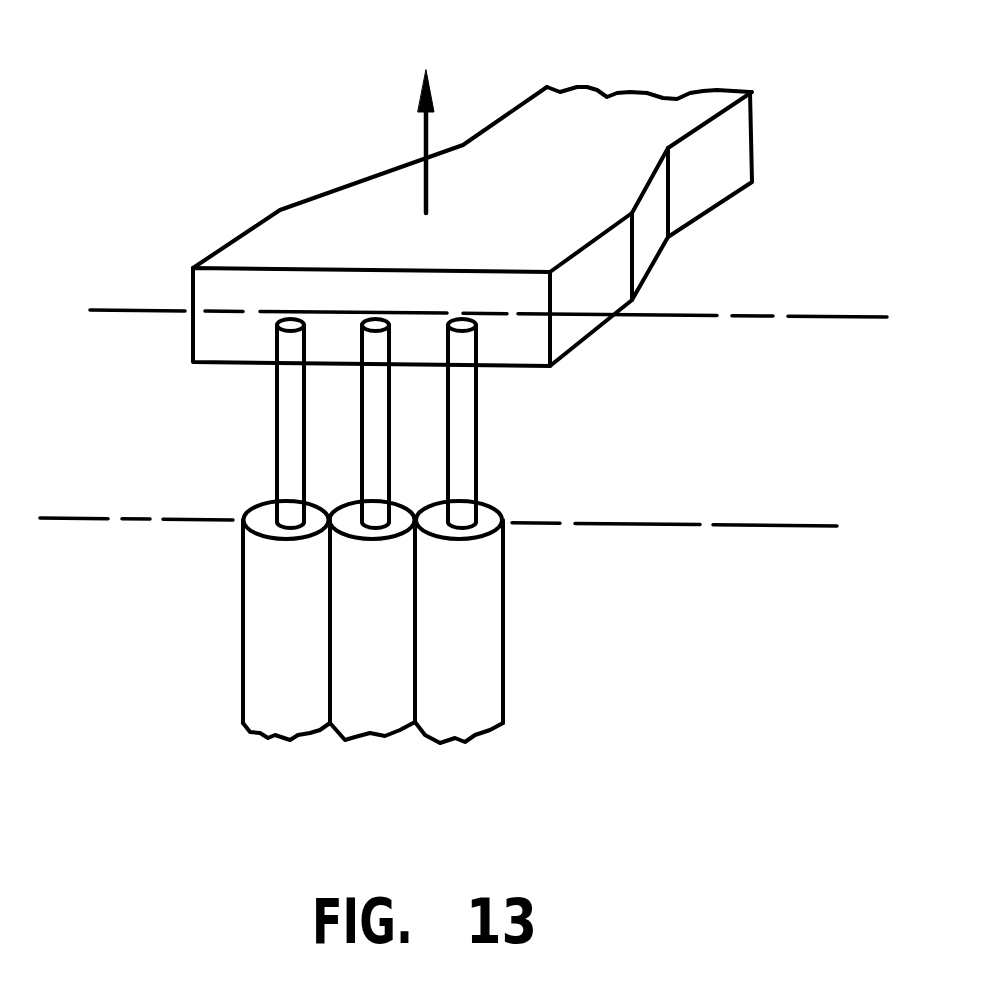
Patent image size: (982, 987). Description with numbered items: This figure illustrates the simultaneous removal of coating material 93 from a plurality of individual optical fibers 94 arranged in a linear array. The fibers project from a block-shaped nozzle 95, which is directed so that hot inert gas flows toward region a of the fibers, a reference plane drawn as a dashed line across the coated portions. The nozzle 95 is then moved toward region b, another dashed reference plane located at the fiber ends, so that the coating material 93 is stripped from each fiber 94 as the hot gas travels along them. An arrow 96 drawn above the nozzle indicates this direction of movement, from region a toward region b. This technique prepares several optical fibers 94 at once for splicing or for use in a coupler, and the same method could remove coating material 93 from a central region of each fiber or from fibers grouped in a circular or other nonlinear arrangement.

The coating material 93 is at (360, 622).
The optical fibers 94 is at (377, 427).
The nozzle 95 is at (323, 223).
The direction of movement arrow 96 is at (422, 142).
The region a is at (713, 526).
The region b is at (715, 317).